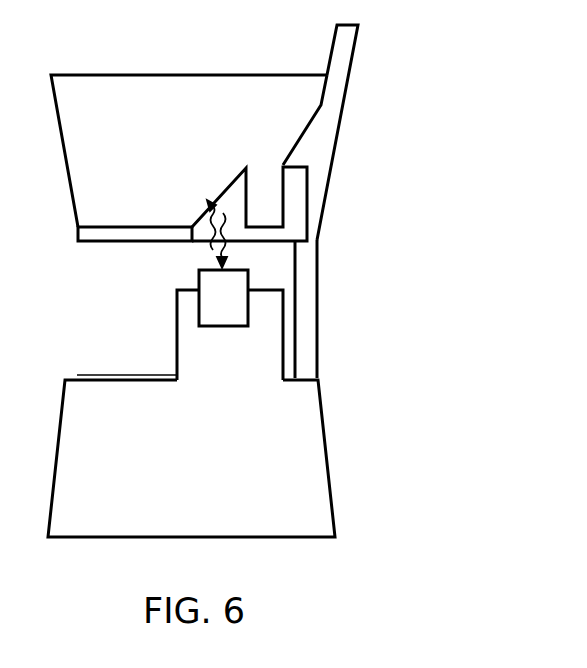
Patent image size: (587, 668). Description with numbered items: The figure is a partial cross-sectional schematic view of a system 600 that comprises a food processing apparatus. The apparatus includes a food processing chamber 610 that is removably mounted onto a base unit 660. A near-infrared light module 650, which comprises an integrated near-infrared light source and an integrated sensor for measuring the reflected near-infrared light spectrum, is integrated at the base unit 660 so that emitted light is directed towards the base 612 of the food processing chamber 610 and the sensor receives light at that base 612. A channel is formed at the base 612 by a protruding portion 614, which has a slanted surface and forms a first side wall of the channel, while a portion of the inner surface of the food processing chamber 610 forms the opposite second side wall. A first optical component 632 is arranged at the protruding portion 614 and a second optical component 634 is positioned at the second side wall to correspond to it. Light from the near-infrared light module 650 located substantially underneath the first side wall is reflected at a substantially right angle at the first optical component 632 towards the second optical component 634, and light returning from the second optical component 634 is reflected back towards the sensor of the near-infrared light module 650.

The system 600 is at (425, 98).
The food processing chamber 610 is at (320, 147).
The base 612 is at (108, 235).
The protruding portion 614 is at (198, 225).
The first optical component 632 is at (235, 195).
The second optical component 634 is at (295, 205).
The near-infrared light module 650 is at (232, 308).
The base unit 660 is at (293, 442).